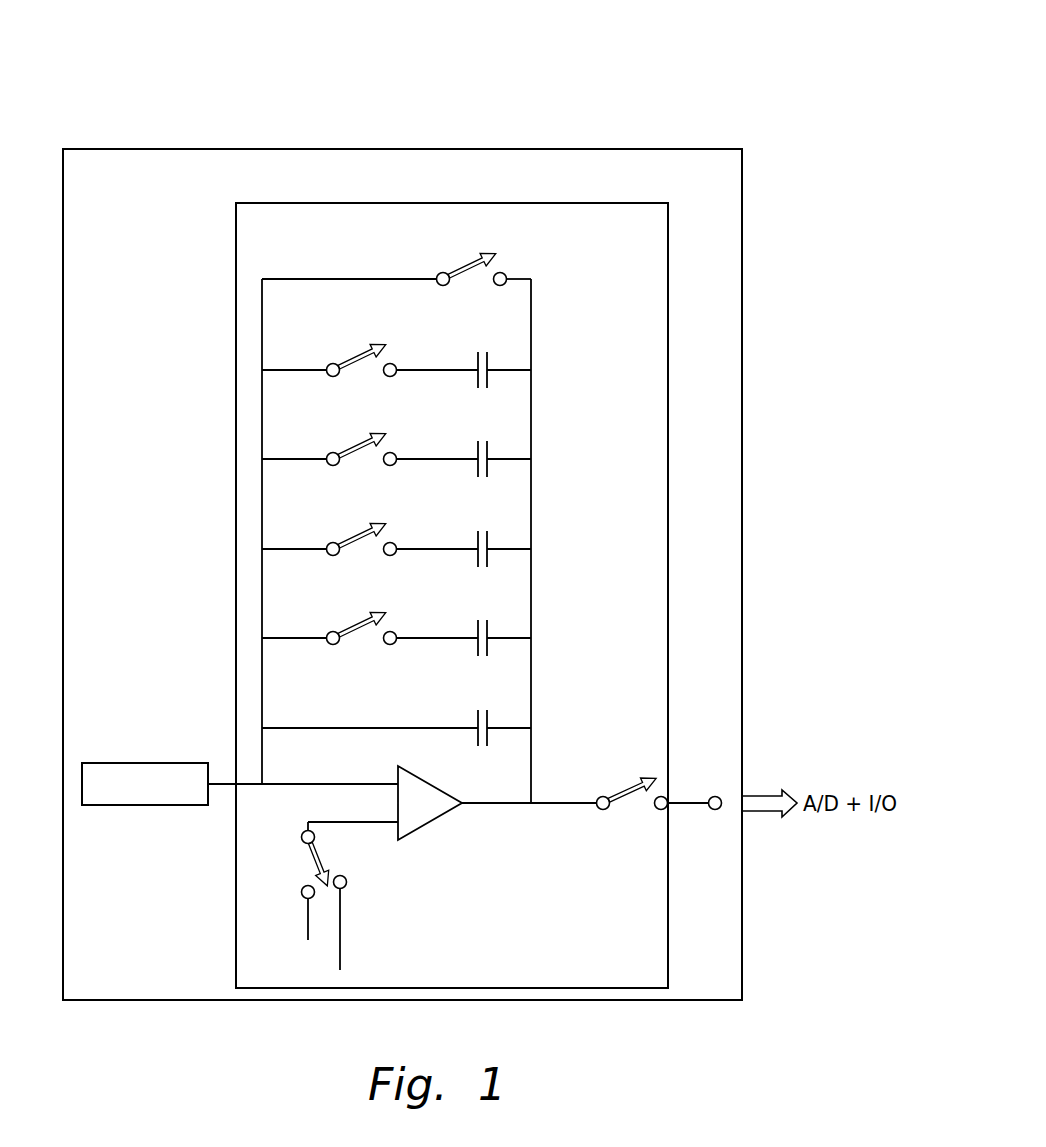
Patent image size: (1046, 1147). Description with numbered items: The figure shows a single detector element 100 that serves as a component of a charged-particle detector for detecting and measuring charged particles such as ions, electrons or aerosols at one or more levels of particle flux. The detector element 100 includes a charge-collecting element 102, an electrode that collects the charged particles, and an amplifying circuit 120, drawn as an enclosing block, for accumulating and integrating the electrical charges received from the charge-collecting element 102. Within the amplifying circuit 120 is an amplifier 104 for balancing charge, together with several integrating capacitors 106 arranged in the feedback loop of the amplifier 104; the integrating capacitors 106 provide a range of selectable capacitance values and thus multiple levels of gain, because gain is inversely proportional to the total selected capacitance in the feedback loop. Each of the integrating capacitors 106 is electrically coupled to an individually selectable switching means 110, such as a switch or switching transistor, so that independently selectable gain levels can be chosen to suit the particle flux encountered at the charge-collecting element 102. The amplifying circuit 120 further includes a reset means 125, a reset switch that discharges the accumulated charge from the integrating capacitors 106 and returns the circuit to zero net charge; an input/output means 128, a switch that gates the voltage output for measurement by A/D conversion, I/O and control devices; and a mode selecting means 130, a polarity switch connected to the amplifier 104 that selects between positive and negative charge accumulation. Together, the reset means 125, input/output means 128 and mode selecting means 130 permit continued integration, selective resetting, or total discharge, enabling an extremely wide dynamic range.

The detector element 100 is at (667, 92).
The charge-collecting element 102 is at (170, 795).
The amplifier 104 is at (397, 776).
The integrating capacitors 106 is at (478, 358).
The switching means 110 is at (353, 351).
The amplifying circuit 120 is at (645, 249).
The reset means 125 is at (468, 265).
The input/output means 128 is at (623, 787).
The mode selecting means 130 is at (310, 858).